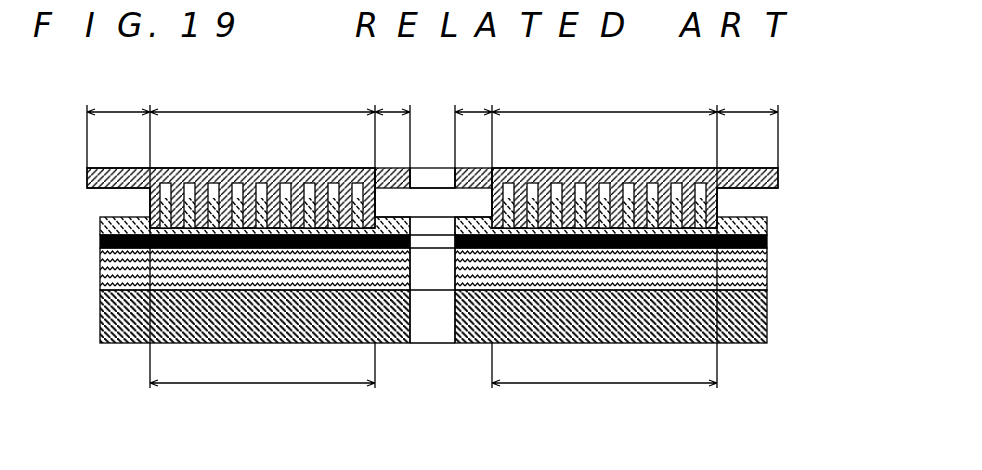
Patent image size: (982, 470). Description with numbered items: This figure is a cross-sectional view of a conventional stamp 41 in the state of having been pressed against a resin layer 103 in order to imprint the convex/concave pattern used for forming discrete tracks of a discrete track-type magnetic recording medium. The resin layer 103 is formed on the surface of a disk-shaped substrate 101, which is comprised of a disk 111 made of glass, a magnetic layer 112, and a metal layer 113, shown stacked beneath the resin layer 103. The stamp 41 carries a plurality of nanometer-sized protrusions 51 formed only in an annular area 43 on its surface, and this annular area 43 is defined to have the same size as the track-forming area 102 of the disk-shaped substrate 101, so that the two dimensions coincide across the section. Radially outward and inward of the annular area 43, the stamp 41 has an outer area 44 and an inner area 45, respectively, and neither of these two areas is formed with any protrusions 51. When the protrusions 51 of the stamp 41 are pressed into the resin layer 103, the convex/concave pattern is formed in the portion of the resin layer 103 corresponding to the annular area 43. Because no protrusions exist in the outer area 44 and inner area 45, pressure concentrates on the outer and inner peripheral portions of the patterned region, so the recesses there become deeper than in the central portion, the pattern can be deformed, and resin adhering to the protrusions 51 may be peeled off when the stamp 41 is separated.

The stamp 41 is at (779, 177).
The annular area 43 is at (433, 99).
The outer area 44 is at (432, 99).
The inner area 45 is at (433, 99).
The protrusions 51 is at (362, 191).
The disk-shaped substrate 101 is at (479, 287).
The track-forming area 102 is at (433, 371).
The resin layer 103 is at (767, 218).
The disk 111 is at (768, 337).
The magnetic layer 112 is at (768, 272).
The metal layer 113 is at (768, 242).